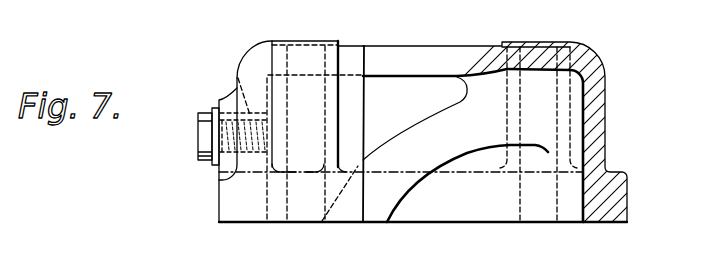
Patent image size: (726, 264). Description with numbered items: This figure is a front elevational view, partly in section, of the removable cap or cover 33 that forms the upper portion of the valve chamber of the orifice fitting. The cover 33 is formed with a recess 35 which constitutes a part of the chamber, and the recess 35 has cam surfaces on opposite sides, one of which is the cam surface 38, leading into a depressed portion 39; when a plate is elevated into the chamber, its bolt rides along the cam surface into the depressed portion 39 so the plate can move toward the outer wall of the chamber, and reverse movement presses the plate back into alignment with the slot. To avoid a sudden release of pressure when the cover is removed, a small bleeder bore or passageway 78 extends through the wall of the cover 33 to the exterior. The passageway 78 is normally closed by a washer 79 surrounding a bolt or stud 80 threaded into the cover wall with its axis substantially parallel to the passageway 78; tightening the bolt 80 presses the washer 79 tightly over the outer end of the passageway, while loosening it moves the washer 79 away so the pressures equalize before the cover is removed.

The cap or cover 33 is at (606, 72).
The recess 35 is at (447, 201).
The cam surface 38 is at (403, 130).
The depressed portion 39 is at (573, 103).
The bore or passageway 78 is at (238, 77).
The washer 79 is at (218, 163).
The bolt or stud 80 is at (200, 140).